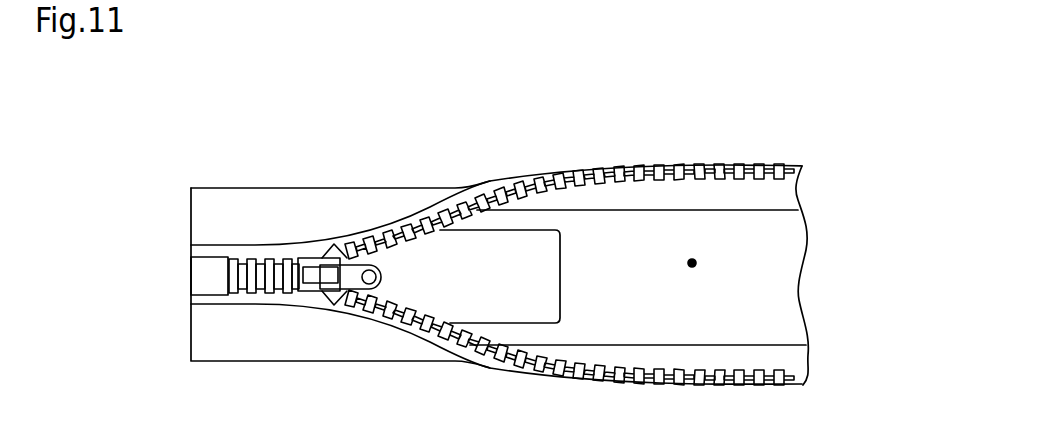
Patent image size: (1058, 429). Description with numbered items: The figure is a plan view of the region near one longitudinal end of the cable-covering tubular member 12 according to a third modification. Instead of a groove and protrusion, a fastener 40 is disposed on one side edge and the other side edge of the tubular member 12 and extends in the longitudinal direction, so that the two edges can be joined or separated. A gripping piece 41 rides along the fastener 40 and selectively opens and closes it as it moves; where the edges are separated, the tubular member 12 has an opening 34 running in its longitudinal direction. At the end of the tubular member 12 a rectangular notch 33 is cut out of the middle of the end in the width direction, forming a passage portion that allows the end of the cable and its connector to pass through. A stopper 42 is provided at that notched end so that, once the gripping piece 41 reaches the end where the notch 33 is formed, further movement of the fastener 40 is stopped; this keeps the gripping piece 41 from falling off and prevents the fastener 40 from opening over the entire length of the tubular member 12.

The tubular member 12 is at (171, 159).
The notch 33 is at (556, 275).
The opening 34 is at (692, 260).
The fastener 40 is at (277, 262).
The gripping piece 41 is at (382, 272).
The stopper 42 is at (206, 275).